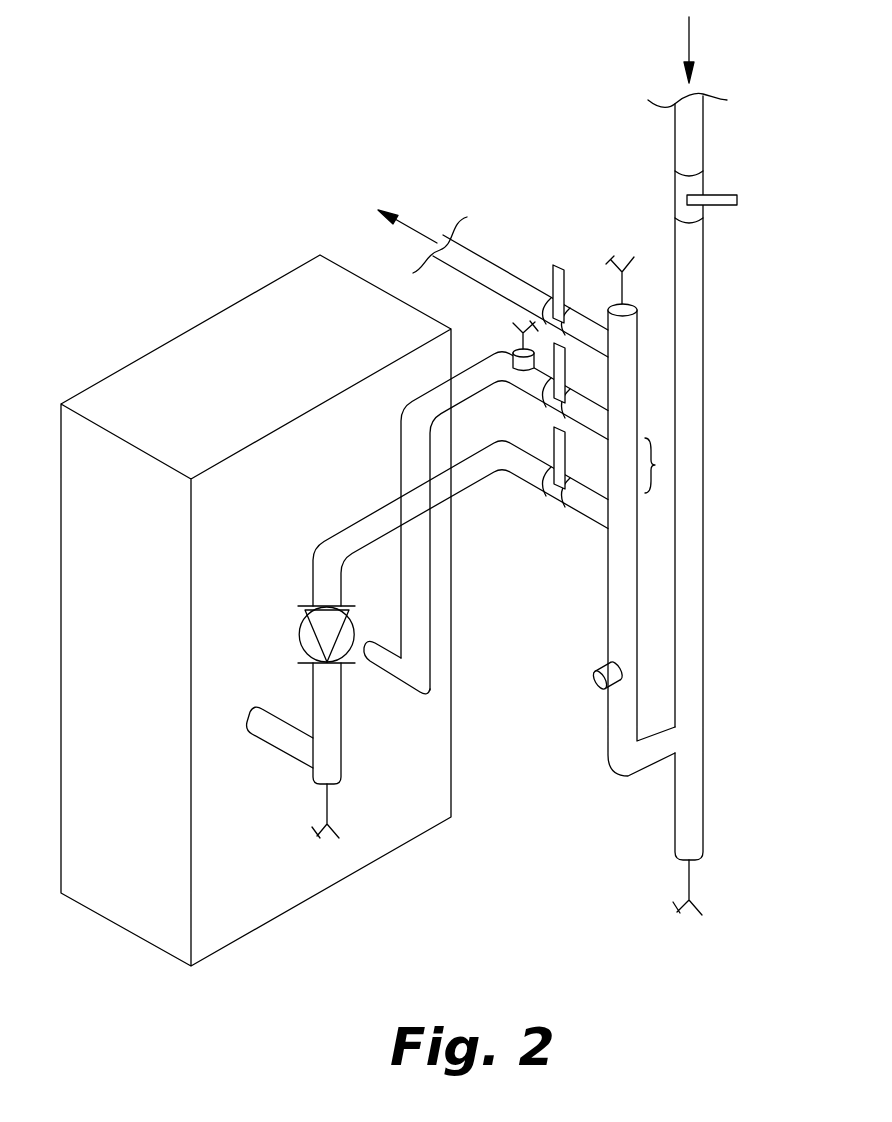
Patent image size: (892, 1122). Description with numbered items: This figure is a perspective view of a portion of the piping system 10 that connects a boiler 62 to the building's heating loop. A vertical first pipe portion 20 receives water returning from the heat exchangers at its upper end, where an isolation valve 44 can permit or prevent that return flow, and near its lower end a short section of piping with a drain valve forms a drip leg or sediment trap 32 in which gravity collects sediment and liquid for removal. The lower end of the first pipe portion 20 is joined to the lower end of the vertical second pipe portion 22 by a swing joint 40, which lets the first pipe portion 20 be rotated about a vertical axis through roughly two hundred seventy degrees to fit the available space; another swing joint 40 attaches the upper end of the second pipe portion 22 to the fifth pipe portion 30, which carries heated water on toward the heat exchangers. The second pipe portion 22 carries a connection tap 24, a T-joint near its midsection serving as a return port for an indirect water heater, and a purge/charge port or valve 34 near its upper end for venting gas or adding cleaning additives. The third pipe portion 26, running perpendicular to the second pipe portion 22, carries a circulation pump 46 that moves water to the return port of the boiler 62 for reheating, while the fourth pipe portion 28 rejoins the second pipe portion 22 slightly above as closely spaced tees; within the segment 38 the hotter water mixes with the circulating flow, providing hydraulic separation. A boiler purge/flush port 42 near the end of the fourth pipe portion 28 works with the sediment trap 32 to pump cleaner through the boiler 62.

The system 10 is at (215, 157).
The first pipe portion 20 is at (692, 570).
The second pipe portion 22 is at (613, 572).
The connection tap 24 is at (598, 670).
The third pipe portion 26 is at (532, 473).
The fourth pipe portion 28 is at (532, 390).
The fifth pipe portion 30 is at (470, 258).
The drip leg or sediment trap 32 is at (328, 807).
The purge/charge port or valve 34 is at (637, 325).
The segment of the second pipe portion 38 is at (655, 465).
The swing joint 40 is at (655, 360).
The boiler purge/flush port 42 is at (520, 333).
The isolation valve 44 is at (737, 200).
The circulation pump 46 is at (296, 630).
The boiler 62 is at (130, 916).